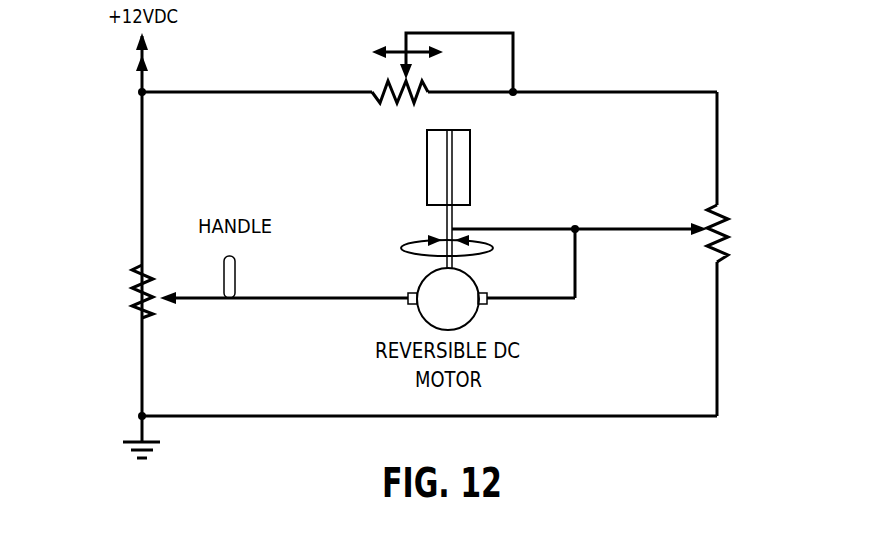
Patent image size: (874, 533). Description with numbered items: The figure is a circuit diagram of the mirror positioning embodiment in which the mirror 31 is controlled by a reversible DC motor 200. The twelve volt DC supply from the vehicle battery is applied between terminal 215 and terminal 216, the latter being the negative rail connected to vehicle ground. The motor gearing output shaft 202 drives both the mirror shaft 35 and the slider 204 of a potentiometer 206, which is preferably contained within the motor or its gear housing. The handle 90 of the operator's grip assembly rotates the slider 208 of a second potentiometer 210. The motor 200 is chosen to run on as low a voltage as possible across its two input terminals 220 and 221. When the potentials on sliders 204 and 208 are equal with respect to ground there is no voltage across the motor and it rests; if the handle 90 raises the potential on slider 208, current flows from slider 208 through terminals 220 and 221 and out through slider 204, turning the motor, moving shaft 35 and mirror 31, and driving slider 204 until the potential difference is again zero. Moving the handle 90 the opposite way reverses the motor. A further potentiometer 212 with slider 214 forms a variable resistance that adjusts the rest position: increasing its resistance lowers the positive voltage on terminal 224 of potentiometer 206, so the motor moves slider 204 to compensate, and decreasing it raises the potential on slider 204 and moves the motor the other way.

The terminal 215 is at (142, 77).
The slider 214 is at (403, 64).
The potentiometer 212 is at (424, 82).
The terminal 224 is at (717, 152).
The potentiometer 206 is at (728, 252).
The slider 204 is at (668, 228).
The mirror 31 is at (465, 157).
The mirror shaft 35 is at (442, 215).
The motor gearing output shaft 202 is at (450, 262).
The reversible DC motor 200 is at (468, 312).
The input terminal 220 is at (413, 293).
The input terminal 221 is at (487, 290).
The slider 208 is at (193, 300).
The potentiometer 210 is at (132, 288).
The handle 90 is at (237, 262).
The terminal 216 is at (142, 425).